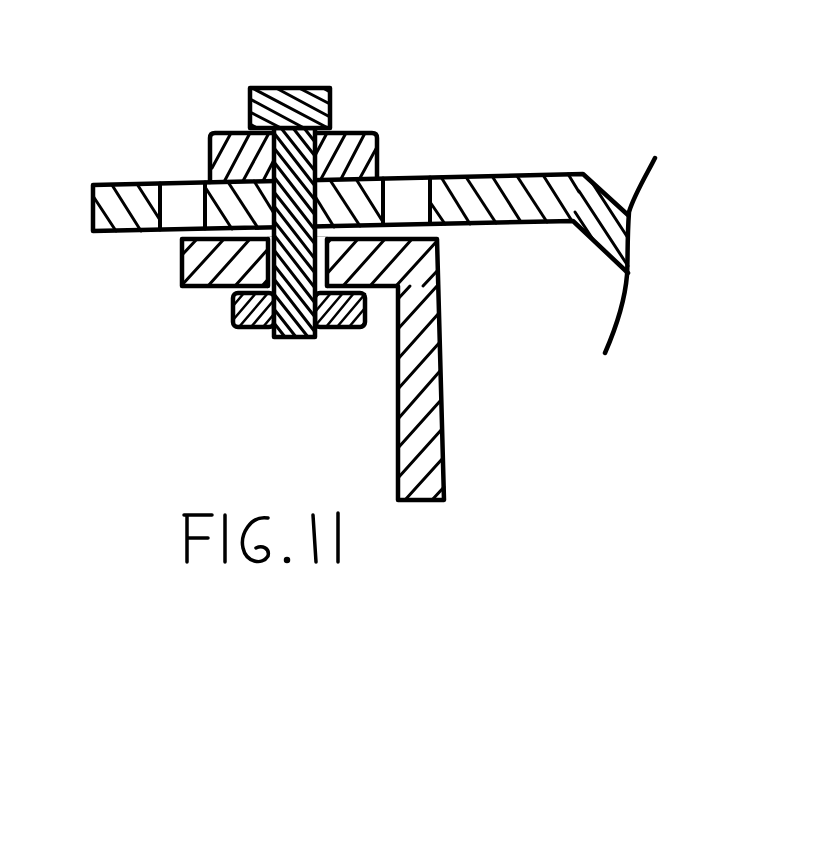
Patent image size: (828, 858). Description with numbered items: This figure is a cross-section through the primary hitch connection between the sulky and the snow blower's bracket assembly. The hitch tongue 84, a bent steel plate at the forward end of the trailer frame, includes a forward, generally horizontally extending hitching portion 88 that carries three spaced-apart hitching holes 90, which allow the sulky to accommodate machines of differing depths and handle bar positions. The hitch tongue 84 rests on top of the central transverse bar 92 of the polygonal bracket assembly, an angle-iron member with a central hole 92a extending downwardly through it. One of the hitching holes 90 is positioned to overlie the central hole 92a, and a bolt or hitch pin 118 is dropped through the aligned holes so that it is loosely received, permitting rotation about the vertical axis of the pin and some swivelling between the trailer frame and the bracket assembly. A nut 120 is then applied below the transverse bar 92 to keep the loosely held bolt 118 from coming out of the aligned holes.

The hitch tongue 84 is at (603, 193).
The hitching portion 88 is at (118, 185).
The hitching holes 90 is at (405, 190).
The central transverse bar 92 is at (425, 402).
The central hole 92a is at (268, 252).
The bolt or hitch pin 118 is at (298, 100).
The nut 120 is at (233, 312).